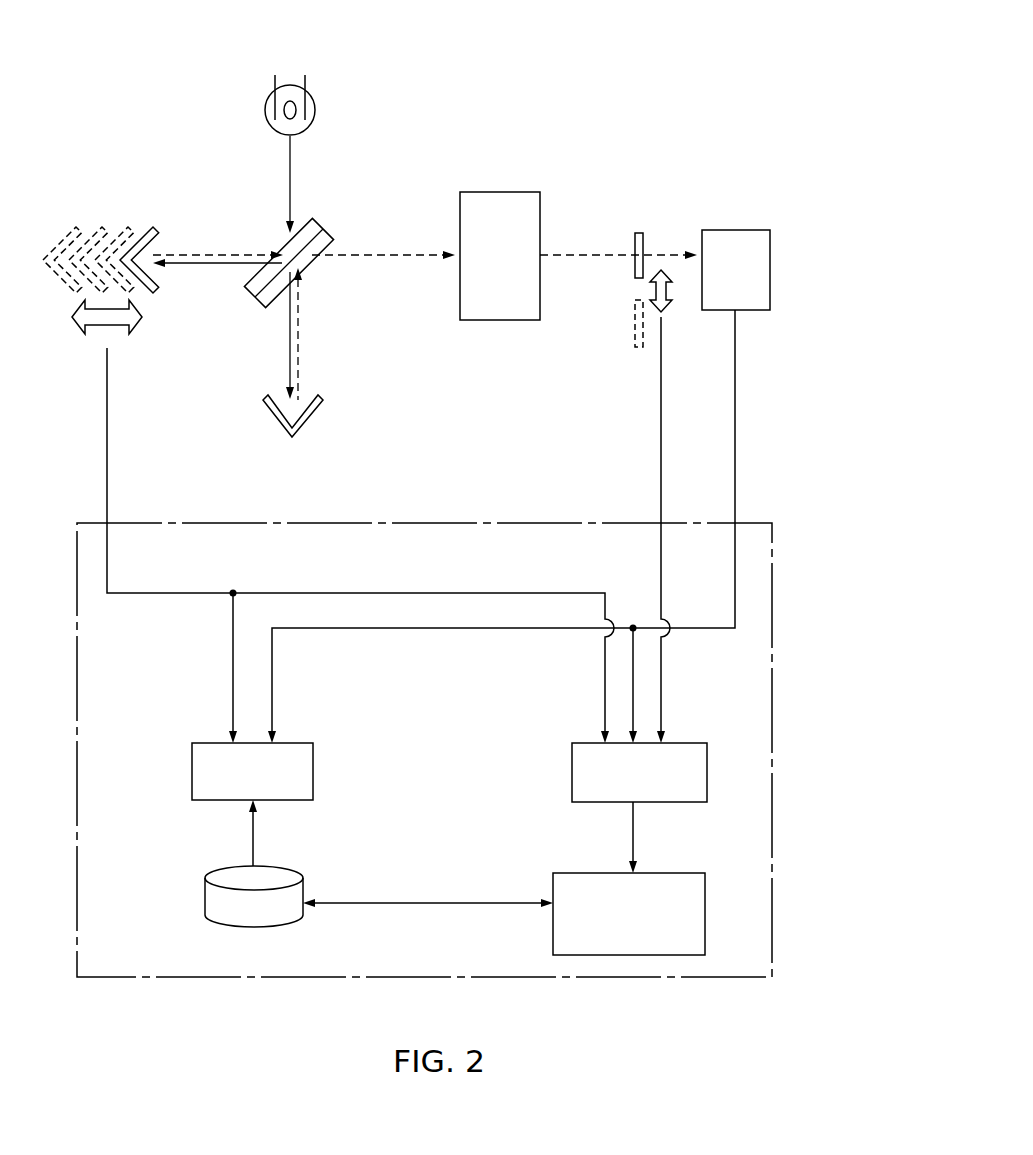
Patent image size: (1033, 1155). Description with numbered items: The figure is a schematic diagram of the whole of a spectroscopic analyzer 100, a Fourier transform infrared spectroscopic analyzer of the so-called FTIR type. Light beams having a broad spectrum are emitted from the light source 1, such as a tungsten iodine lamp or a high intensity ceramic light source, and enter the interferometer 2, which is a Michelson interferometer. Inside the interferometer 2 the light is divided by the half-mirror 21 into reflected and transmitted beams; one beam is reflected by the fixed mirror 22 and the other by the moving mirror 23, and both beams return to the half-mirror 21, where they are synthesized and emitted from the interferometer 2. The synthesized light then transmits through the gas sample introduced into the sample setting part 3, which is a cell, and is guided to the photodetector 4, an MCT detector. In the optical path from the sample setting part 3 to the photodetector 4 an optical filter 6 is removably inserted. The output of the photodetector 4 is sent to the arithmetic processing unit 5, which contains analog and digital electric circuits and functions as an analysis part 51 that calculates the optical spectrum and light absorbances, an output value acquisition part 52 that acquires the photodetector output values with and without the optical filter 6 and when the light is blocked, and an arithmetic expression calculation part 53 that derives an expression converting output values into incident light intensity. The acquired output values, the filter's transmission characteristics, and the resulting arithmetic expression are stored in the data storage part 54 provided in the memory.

The spectroscopic analyzer 100 is at (496, 108).
The light source 1 is at (313, 101).
The interferometer 2 is at (240, 209).
The sample setting part 3 is at (518, 192).
The photodetector 4 is at (752, 230).
The arithmetic processing unit 5 is at (443, 523).
The optical filter 6 is at (638, 232).
The half-mirror 21 is at (314, 219).
The fixed mirror 22 is at (323, 401).
The moving mirror 23 is at (146, 229).
The analysis part 51 is at (313, 753).
The output value acquisition part 52 is at (572, 752).
The arithmetic expression calculation part 53 is at (553, 880).
The data storage part 54 is at (303, 878).